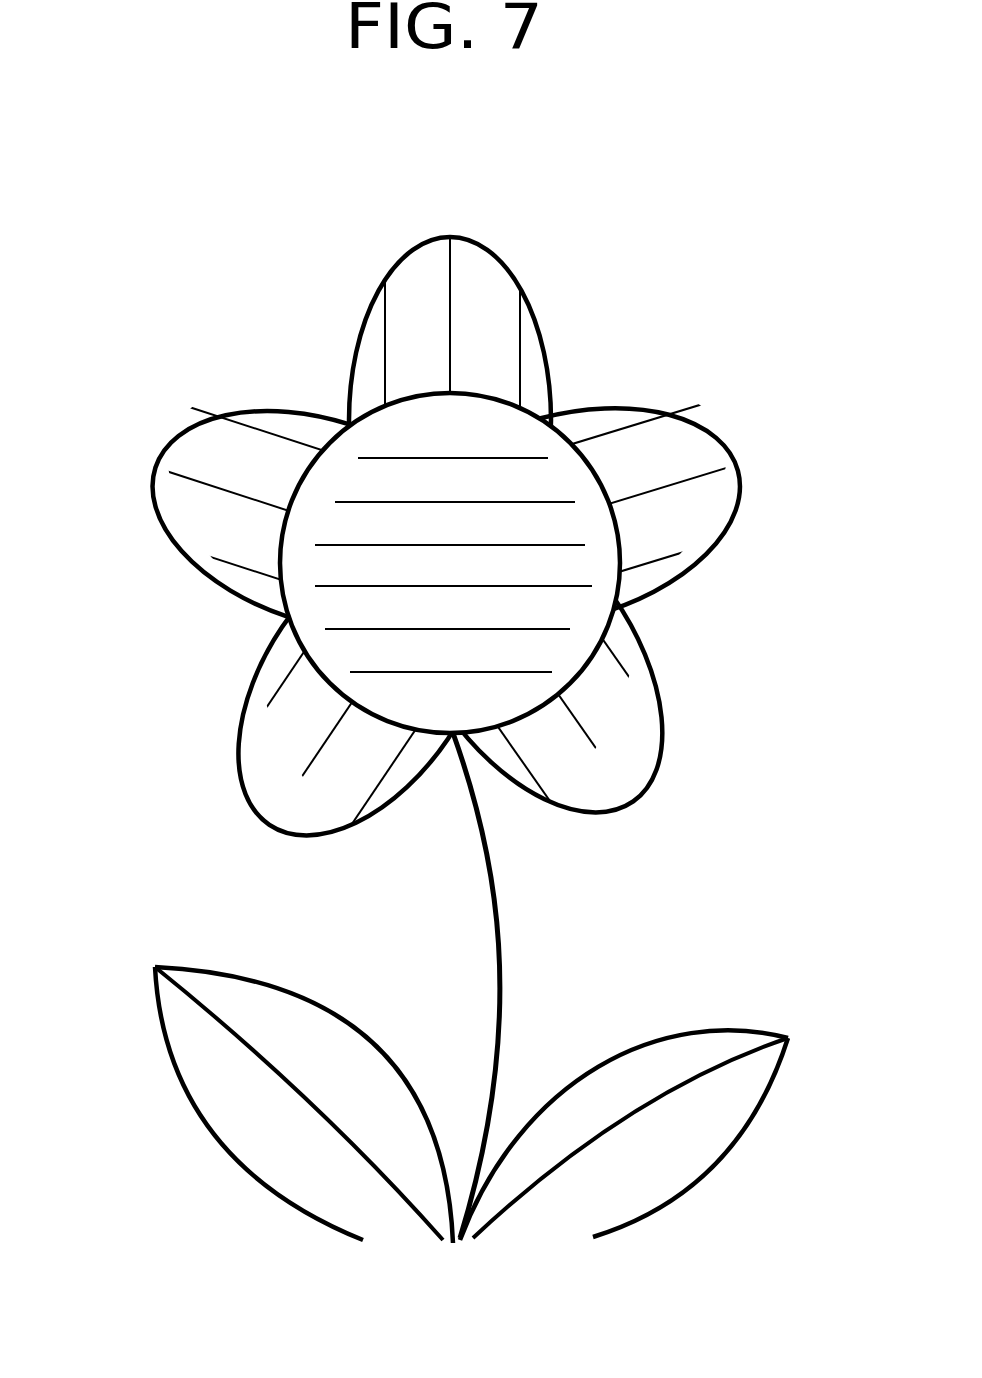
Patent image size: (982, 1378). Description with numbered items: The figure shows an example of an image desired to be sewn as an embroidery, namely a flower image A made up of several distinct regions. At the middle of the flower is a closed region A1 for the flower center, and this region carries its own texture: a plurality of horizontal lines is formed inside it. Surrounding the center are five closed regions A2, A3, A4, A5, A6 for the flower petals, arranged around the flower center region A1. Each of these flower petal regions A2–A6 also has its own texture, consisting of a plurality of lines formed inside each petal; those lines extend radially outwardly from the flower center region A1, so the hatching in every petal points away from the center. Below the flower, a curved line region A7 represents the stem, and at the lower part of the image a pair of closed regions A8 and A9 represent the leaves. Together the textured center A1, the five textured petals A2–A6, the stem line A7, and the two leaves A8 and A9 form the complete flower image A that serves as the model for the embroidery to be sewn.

The flower image A is at (745, 288).
The flower center region A1 is at (340, 453).
The flower petal region A2 is at (507, 262).
The flower petal region A3 is at (730, 443).
The flower petal region A4 is at (653, 683).
The flower petal region A5 is at (243, 715).
The flower petal region A6 is at (163, 445).
The stem region A7 is at (503, 932).
The leaf region A8 is at (210, 967).
The leaf region A9 is at (733, 1028).